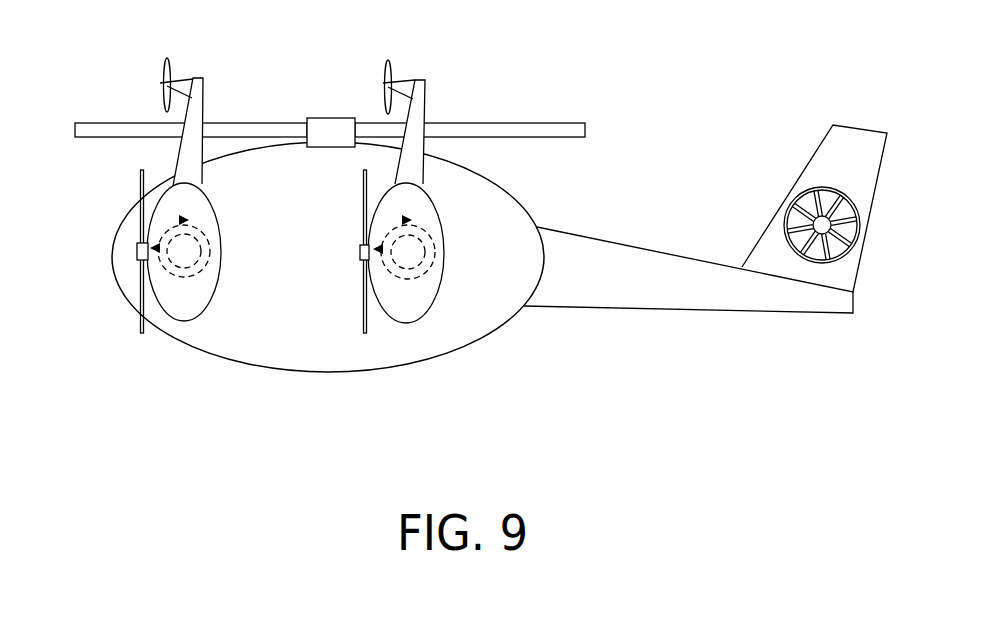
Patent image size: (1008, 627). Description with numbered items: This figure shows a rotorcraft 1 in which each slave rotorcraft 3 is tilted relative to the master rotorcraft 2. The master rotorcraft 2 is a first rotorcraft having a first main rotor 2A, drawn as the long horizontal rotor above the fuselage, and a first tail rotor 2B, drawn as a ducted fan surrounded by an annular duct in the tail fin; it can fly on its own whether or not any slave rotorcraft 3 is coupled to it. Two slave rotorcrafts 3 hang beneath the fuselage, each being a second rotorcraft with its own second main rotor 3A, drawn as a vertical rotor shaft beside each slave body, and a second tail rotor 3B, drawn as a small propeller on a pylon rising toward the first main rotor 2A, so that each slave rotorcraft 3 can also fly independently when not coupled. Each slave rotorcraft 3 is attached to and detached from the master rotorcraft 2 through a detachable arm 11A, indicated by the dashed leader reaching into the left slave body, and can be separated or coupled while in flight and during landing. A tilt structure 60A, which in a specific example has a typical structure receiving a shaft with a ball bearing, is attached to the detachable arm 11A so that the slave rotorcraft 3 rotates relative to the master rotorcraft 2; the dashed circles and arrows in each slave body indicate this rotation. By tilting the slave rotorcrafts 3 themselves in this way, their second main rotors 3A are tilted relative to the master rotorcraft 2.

The rotorcraft 1 is at (509, 88).
The master rotorcraft 2 is at (527, 209).
The first main rotor 2A is at (252, 123).
The first tail rotor 2B is at (787, 217).
The slave rotorcraft 3 is at (177, 322).
The second main rotor 3A is at (140, 325).
The second tail rotor 3B is at (165, 72).
The tilt structure 60A is at (196, 278).
The detachable arm 11A is at (222, 256).